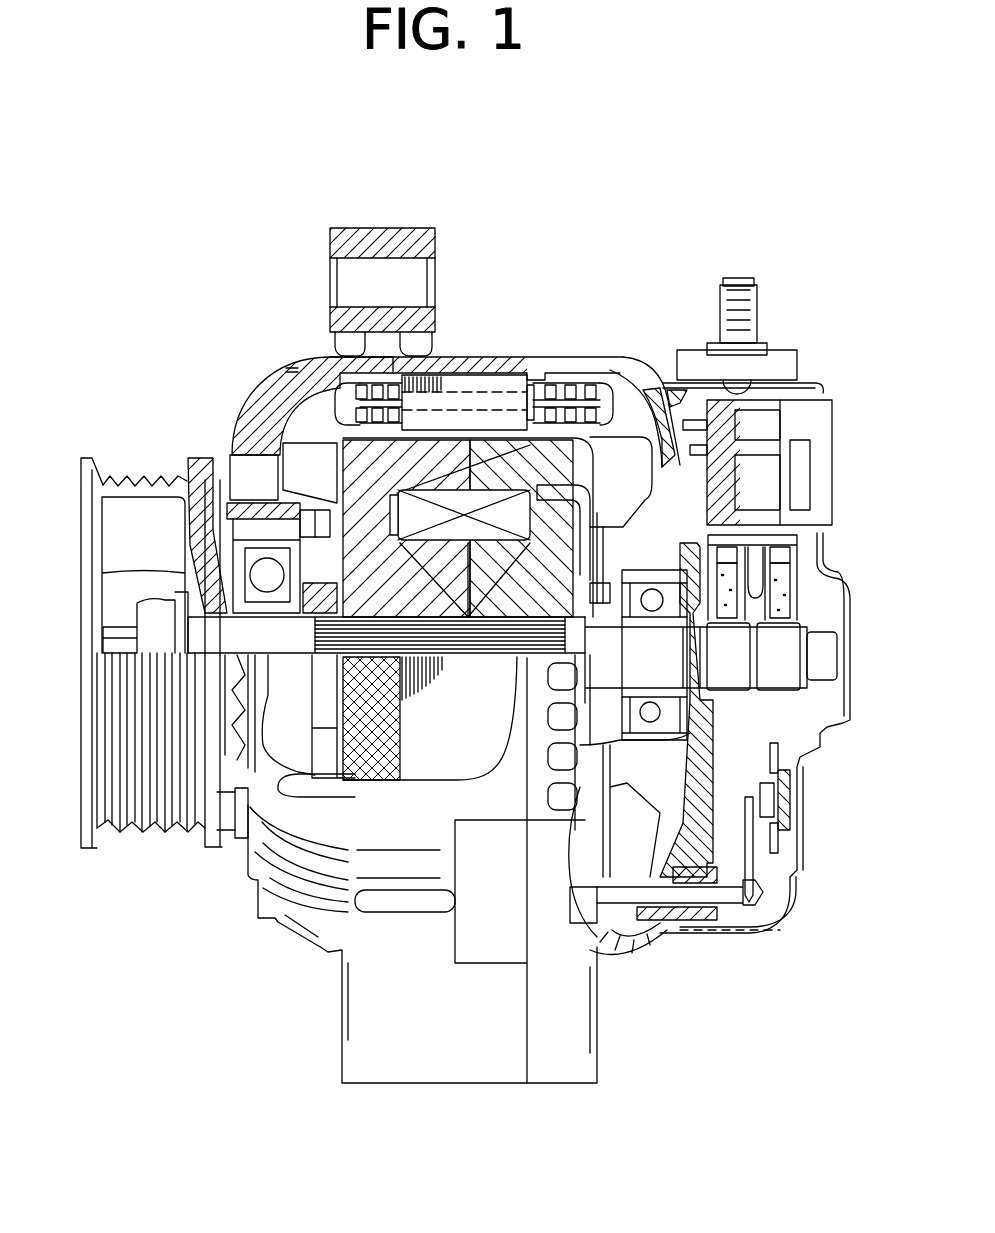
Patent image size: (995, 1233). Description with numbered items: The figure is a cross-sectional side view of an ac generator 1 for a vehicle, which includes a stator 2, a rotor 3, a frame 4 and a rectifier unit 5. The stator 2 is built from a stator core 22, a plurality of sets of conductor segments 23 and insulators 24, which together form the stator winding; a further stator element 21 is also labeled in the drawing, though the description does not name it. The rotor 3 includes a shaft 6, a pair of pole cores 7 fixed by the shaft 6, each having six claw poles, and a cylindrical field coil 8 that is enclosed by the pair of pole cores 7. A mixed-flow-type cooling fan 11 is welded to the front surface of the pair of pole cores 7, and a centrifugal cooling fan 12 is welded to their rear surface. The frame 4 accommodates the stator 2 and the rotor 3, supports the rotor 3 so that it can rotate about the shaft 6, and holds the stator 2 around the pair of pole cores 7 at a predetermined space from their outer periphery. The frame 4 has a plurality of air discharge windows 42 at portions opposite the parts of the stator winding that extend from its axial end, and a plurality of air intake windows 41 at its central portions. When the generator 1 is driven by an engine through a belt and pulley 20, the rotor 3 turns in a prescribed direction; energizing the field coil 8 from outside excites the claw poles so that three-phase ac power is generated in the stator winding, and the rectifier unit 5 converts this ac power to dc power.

The ac generator 1 is at (628, 213).
The stator 2 is at (577, 463).
The rotor 3 is at (293, 437).
The frame 4 is at (462, 500).
The rectifier unit 5 is at (770, 790).
The shaft 6 is at (102, 573).
The pole cores 7 is at (626, 383).
The field coil 8 is at (533, 383).
The mixed-flow-type cooling fan 11 is at (245, 470).
The centrifugal cooling fan 12 is at (633, 495).
The pulley 20 is at (122, 468).
The stator coil end 21 is at (334, 381).
The stator core 22 is at (450, 378).
The conductor segments 23 is at (603, 380).
The insulators 24 is at (565, 378).
The air intake windows 41 is at (672, 473).
The air discharge windows 42 is at (292, 374).